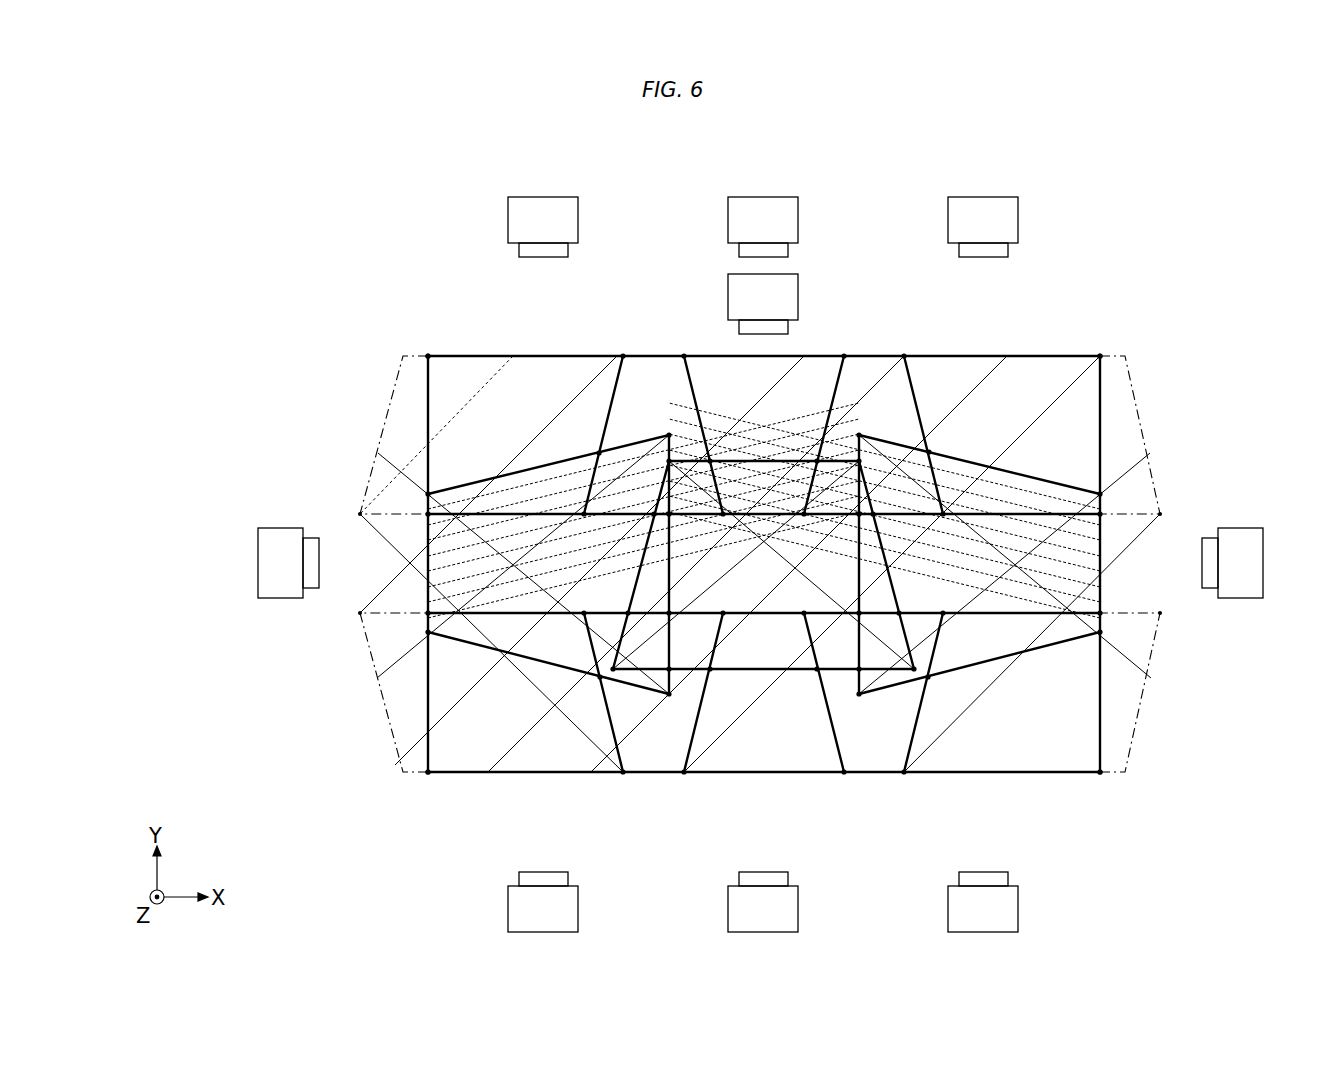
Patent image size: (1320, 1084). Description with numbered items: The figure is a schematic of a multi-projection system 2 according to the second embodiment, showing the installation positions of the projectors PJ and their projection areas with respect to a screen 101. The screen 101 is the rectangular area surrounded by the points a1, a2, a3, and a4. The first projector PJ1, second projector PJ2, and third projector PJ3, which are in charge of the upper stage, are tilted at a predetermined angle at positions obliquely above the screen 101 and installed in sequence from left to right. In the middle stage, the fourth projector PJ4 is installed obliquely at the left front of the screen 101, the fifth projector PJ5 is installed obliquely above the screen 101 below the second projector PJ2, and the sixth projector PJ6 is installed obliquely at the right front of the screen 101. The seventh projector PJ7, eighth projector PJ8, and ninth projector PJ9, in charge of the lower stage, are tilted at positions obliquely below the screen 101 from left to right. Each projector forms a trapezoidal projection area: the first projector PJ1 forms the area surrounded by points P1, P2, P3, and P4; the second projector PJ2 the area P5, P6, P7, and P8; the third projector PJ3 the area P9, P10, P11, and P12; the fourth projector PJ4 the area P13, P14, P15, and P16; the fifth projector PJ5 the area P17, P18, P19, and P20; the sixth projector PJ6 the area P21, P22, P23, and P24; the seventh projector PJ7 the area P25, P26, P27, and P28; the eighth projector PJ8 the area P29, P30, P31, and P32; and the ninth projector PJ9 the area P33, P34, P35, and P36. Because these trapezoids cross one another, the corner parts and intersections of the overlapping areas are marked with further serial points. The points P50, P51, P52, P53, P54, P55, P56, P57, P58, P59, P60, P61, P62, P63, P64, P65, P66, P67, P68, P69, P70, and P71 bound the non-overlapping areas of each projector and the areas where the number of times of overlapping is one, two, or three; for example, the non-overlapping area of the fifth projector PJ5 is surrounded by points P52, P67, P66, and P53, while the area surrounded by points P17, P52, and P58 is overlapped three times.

The multi-projection system 2 is at (326, 254).
The screen 101 is at (486, 355).
The projectors PJ is at (498, 184).
The first projector PJ1 is at (578, 228).
The second projector PJ2 is at (798, 228).
The third projector PJ3 is at (1018, 228).
The fourth projector PJ4 is at (292, 598).
The fifth projector PJ5 is at (798, 292).
The sixth projector PJ6 is at (1236, 598).
The seventh projector PJ7 is at (578, 908).
The eighth projector PJ8 is at (798, 908).
The ninth projector PJ9 is at (1018, 908).
The point a1 is at (427, 354).
The point a2 is at (1098, 354).
The point a3 is at (1098, 784).
The point a4 is at (427, 784).
The point P1 is at (407, 345).
The point P2 is at (683, 344).
The point P3 is at (733, 528).
The point P4 is at (361, 528).
The point P5 is at (621, 344).
The point P6 is at (902, 344).
The point P7 is at (954, 528).
The point P8 is at (575, 528).
The point P9 is at (843, 344).
The point P10 is at (1126, 344).
The point P11 is at (1177, 528).
The point P12 is at (789, 528).
The point P13 is at (408, 638).
The point P14 is at (408, 495).
The point P15 is at (677, 424).
The point P16 is at (677, 707).
The point P17 is at (649, 463).
The point P18 is at (880, 463).
The point P19 is at (893, 659).
The point P20 is at (637, 659).
The point P21 is at (1121, 493).
The point P22 is at (1121, 638).
The point P23 is at (848, 707).
The point P24 is at (848, 424).
The point P25 is at (684, 786).
The point P26 is at (401, 786).
The point P27 is at (352, 601).
The point P28 is at (740, 601).
The point P29 is at (905, 786).
The point P30 is at (623, 786).
The point P31 is at (567, 601).
The point P32 is at (962, 601).
The point P33 is at (1126, 786).
The point P34 is at (844, 786).
The point P35 is at (791, 601).
The point P36 is at (1176, 601).
The point P50 is at (408, 528).
The point P51 is at (581, 443).
The point P52 is at (688, 528).
The point P53 is at (688, 601).
The point P54 is at (690, 659).
The point P55 is at (583, 688).
The point P56 is at (408, 601).
The point P57 is at (612, 601).
The point P58 is at (632, 528).
The point P59 is at (731, 448).
The point P60 is at (798, 448).
The point P61 is at (896, 528).
The point P62 is at (912, 601).
The point P63 is at (839, 659).
The point P64 is at (799, 684).
The point P65 is at (729, 684).
The point P66 is at (840, 601).
The point P67 is at (841, 528).
The point P68 is at (948, 441).
The point P69 is at (1121, 528).
The point P70 is at (1121, 601).
The point P71 is at (947, 688).